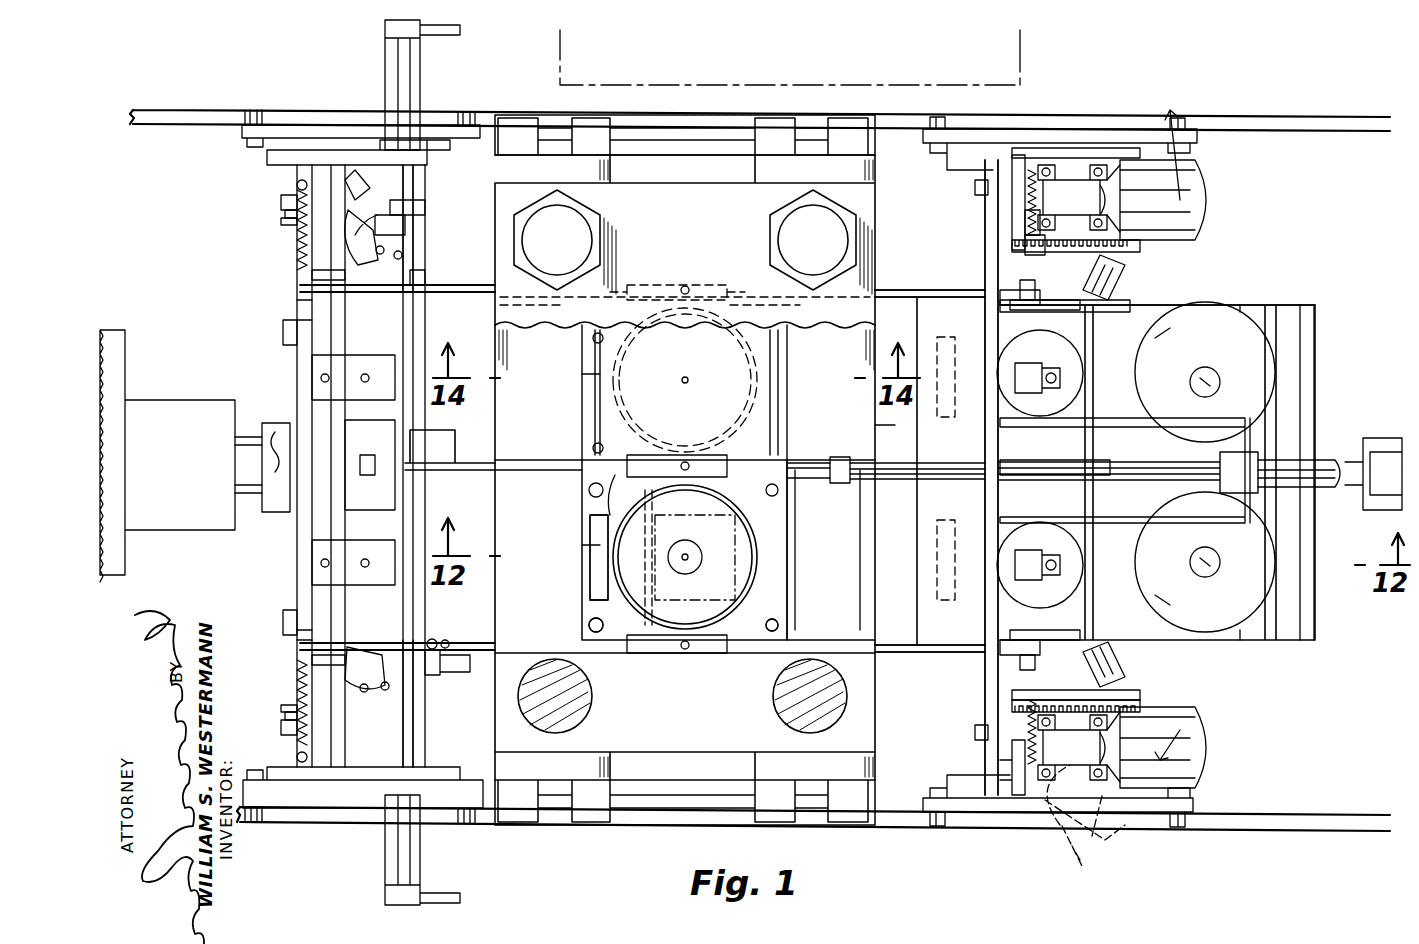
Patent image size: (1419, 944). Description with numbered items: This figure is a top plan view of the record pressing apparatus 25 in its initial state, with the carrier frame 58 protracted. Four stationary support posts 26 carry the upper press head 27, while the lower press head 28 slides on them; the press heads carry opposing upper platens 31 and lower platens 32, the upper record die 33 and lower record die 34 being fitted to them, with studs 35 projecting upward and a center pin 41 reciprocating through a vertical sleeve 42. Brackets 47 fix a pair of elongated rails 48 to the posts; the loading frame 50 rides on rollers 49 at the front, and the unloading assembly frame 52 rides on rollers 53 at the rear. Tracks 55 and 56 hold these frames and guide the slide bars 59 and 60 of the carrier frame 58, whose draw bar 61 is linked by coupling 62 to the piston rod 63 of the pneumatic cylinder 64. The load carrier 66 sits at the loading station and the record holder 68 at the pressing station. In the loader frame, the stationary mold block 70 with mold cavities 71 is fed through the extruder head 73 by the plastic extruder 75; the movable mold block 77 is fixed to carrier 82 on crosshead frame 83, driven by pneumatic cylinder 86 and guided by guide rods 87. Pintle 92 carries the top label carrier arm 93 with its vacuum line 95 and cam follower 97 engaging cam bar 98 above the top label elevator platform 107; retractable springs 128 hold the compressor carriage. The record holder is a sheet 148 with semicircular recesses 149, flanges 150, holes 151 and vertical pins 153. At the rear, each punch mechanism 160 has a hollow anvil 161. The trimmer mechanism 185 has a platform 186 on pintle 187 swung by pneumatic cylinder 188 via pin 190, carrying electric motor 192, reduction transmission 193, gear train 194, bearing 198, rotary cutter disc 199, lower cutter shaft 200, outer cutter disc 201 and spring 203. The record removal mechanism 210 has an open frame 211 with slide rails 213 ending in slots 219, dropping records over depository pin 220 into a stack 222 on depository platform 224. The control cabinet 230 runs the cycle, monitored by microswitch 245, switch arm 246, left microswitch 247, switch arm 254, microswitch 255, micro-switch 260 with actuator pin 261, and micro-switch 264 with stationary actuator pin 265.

The apparatus 25 is at (1064, 109).
The vertical stationary support posts 26 is at (569, 250).
The upper press head 27 is at (684, 236).
The lower press head 28 is at (842, 600).
The upper platens 31 is at (771, 346).
The lower platens 32 is at (785, 527).
The upper record die 33 is at (685, 380).
The lower record die 34 is at (712, 493).
The studs 35 is at (588, 623).
The center pin 41 is at (688, 377).
The vertical sleeve 42 is at (698, 565).
The brackets 47 is at (685, 470).
The elongated rails 48 is at (204, 110).
The rollers 49 is at (258, 102).
The loading frame 50 is at (202, 217).
The unloading assembly frame 52 is at (1239, 283).
The rollers 53 is at (937, 120).
The carrier rail or track 55 is at (888, 304).
The carrier rail or track 56 is at (888, 643).
The carrier frame 58 is at (482, 270).
The slide bar 59 is at (480, 293).
The slide bar 60 is at (502, 632).
The draw bar 61 is at (486, 458).
The coupling 62 is at (839, 457).
The piston rod 63 is at (880, 478).
The pneumatic cylinder 64 is at (1332, 459).
The load carrier 66 is at (302, 383).
The record holder 68 is at (569, 379).
The stationary mold block 70 is at (305, 498).
The mold cavities 71 is at (366, 442).
The extruder head 73 is at (285, 426).
The plastic extruder 75 is at (182, 432).
The movable mold block 77 is at (297, 303).
The carrier 82 is at (405, 232).
The crosshead frame 83 is at (425, 206).
The pneumatic cylinder 86 is at (395, 68).
The guide rods 87 is at (413, 184).
The pintle 92 is at (390, 252).
The top label carrier arm 93 is at (367, 453).
The vacuum line 95 is at (354, 172).
The cam follower 97 is at (405, 258).
The cam bar 98 is at (415, 286).
The top label elevator platform 107 is at (310, 252).
The retractable springs 128 is at (305, 272).
The flat sheet material 148 is at (570, 520).
The semicircular recesses 149 is at (617, 480).
The vertically spaced flanges 150 is at (668, 272).
The holes 151 is at (585, 495).
The vertical pins 153 is at (687, 286).
The punch mechanism 160 is at (958, 622).
The hollow anvil 161 is at (1078, 370).
The trimmer mechanism 185 is at (1250, 183).
The platform 186 is at (1095, 155).
The vertical pintle 187 is at (985, 224).
The pneumatic cylinder 188 is at (1118, 283).
The pin 190 is at (1125, 165).
The electric motor 192 is at (1192, 189).
The reduction transmission 193 is at (1060, 838).
The gear train 194 is at (1135, 256).
The bearing 198 is at (1022, 281).
The rotary cutter disc 199 is at (1035, 302).
The lower cutter shaft 200 is at (1028, 200).
The outer cutter disc 201 is at (1042, 305).
The spring 203 is at (1030, 238).
The record removal mechanism 210 is at (1347, 332).
The open frame 211 is at (1314, 357).
The slide rails 213 is at (1115, 308).
The opposed slots 219 is at (1244, 305).
The depository pin 220 is at (1193, 378).
The stack 222 is at (1152, 338).
The depository platform 224 is at (1247, 353).
The control cabinet 230 is at (1024, 70).
The microswitch 245 is at (283, 336).
The switch arm 246 is at (285, 218).
The left microswitch 247 is at (281, 208).
The switch arm 254 is at (812, 492).
The microswitch 255 is at (1200, 484).
The stationary micro-switch 260 is at (440, 675).
The actuator pin 261 is at (440, 640).
The micro-switch 264 is at (1013, 155).
The stationary actuator pin 265 is at (977, 186).